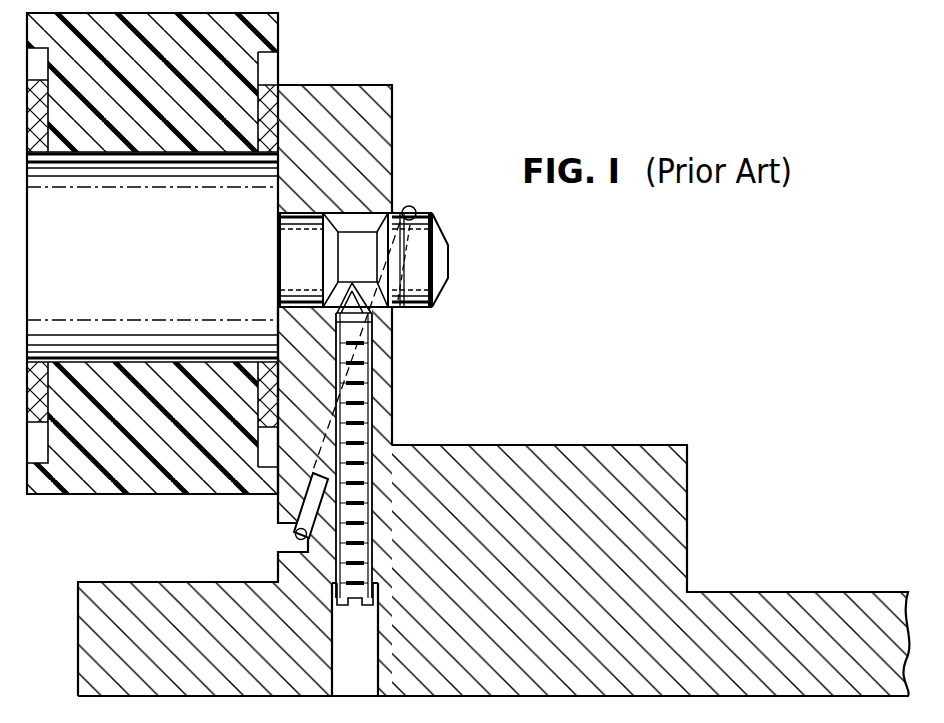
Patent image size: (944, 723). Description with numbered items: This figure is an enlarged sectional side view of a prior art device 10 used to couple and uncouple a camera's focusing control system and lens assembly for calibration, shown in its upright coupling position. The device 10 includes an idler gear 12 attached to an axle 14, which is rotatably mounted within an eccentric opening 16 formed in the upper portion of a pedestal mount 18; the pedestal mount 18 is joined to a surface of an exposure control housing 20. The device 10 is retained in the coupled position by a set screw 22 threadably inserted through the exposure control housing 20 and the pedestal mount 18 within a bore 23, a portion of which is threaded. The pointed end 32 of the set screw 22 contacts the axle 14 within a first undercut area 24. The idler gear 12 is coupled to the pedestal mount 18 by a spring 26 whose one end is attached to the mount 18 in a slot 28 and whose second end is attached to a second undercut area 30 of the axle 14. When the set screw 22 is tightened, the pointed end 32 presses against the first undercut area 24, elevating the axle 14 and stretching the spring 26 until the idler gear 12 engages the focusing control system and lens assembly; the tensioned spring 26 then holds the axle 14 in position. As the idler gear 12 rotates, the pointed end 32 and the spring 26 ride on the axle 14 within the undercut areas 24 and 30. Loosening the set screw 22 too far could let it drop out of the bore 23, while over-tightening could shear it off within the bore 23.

The prior art device 10 is at (453, 234).
The idler gear 12 is at (258, 14).
The axle 14 is at (450, 262).
The eccentric opening 16 is at (314, 339).
The pedestal mount 18 is at (392, 108).
The exposure control housing 20 is at (758, 592).
The set screw 22 is at (360, 418).
The bore 23 is at (367, 688).
The first undercut area 24 is at (352, 232).
The spring 26 is at (416, 210).
The slot 28 is at (288, 542).
The second undercut area 30 is at (412, 285).
The pointed end 32 is at (342, 298).